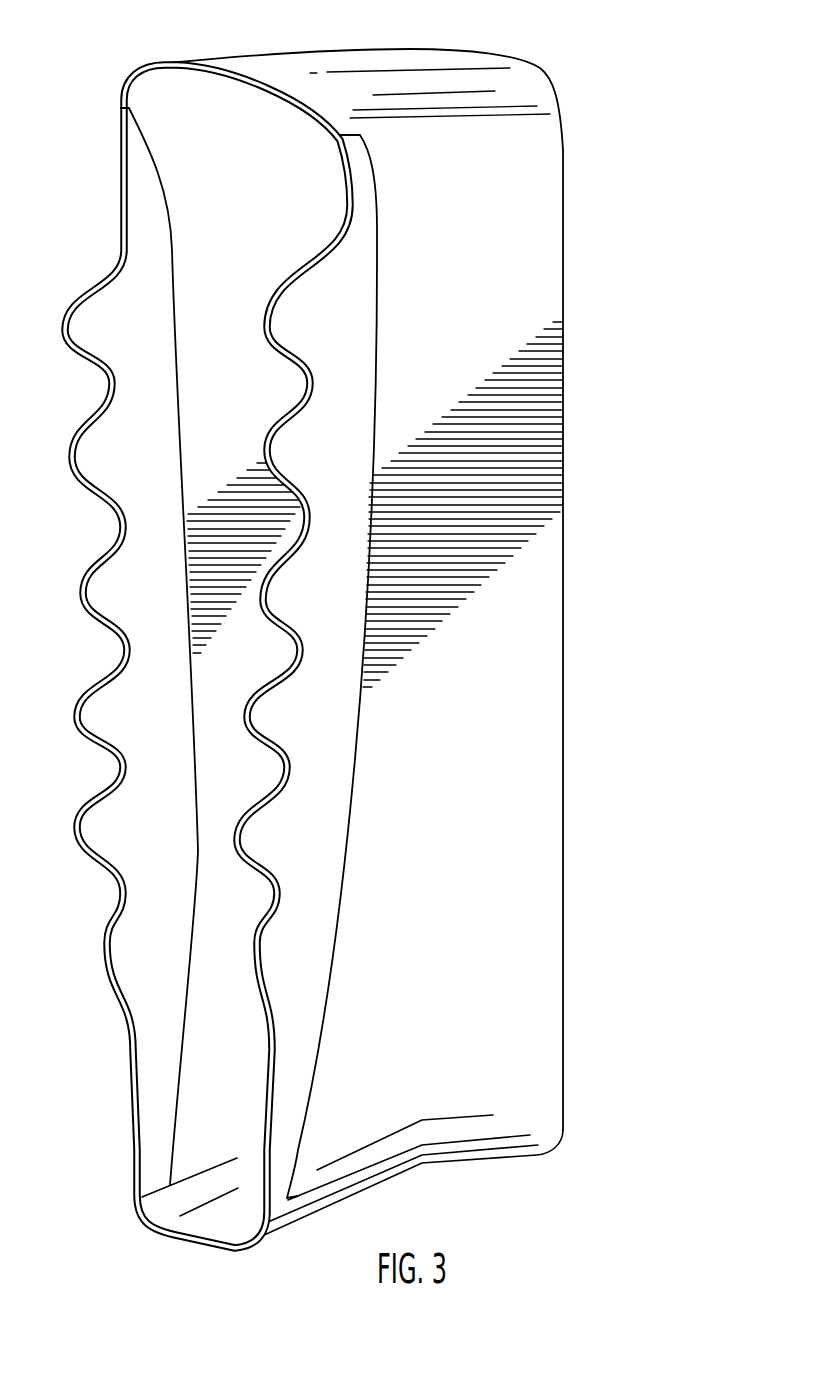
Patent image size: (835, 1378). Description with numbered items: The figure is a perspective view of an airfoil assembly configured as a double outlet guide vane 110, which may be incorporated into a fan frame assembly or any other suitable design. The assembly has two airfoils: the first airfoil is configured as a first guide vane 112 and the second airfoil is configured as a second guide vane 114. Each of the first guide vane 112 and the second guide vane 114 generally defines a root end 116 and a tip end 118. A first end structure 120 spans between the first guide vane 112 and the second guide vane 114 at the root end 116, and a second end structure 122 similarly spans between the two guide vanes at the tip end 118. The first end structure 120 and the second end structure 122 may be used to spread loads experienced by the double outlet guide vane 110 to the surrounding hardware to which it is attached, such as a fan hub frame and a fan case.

The double outlet guide vane 110 is at (377, 644).
The first guide vane 112 is at (546, 391).
The second guide vane 114 is at (190, 358).
The root end 116 is at (533, 1098).
The tip end 118 is at (553, 148).
The first end structure 120 is at (190, 1242).
The second end structure 122 is at (303, 65).